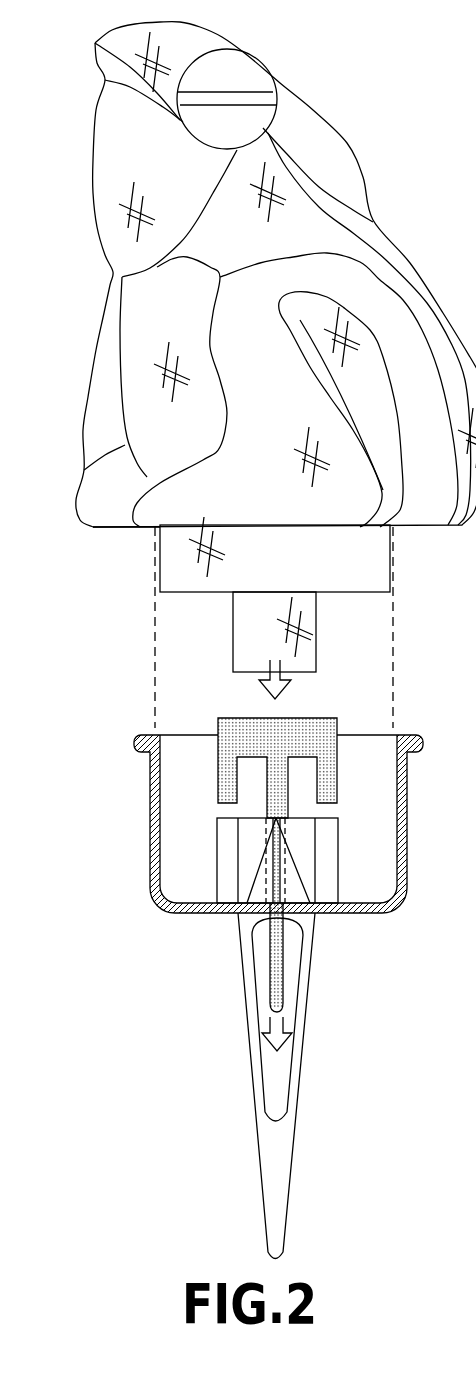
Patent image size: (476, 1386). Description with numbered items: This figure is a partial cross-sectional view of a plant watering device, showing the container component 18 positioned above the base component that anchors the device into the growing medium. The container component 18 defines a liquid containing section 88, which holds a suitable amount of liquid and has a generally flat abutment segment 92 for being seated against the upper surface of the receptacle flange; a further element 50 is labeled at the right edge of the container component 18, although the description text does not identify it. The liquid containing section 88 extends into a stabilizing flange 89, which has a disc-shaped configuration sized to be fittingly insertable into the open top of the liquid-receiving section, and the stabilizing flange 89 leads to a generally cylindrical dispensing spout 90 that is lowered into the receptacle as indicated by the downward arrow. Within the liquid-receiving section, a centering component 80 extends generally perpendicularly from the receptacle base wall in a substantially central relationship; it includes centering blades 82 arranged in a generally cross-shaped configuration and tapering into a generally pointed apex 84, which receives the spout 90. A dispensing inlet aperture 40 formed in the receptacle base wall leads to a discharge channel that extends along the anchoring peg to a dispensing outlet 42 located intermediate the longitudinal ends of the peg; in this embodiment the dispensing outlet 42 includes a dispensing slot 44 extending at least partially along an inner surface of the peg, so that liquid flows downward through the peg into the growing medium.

The container component 18 is at (410, 150).
The liquid containing section 88 is at (86, 312).
The dispensing inlet aperture 40 is at (368, 326).
The fold 50 is at (348, 390).
The abutment segment 92 is at (120, 527).
The stabilizing flange 89 is at (367, 594).
The dispensing spout 90 is at (316, 627).
The pointed apex 84 is at (277, 817).
The centering component 80 is at (256, 866).
The centering blades 82 is at (287, 865).
The dispensing outlet 42 is at (307, 1014).
The dispensing slot 44 is at (265, 985).